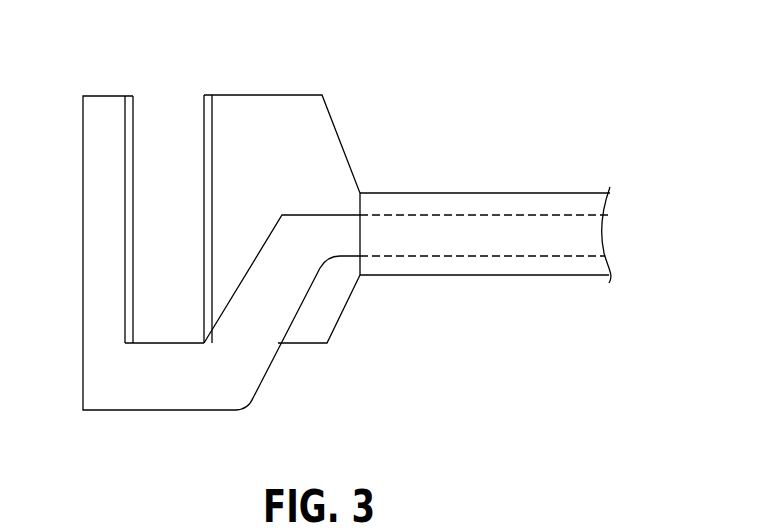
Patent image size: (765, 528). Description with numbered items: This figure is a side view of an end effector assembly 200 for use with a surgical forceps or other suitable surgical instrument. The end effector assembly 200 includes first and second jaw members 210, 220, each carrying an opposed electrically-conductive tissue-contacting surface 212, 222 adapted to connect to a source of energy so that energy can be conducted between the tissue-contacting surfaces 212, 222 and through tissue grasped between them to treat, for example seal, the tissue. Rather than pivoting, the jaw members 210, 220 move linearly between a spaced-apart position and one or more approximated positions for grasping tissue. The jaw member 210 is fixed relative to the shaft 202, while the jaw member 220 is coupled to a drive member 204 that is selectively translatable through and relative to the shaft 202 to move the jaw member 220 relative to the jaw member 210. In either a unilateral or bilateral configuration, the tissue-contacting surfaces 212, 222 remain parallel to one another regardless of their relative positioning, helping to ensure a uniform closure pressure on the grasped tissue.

The end effector assembly 200 is at (511, 105).
The shaft 202 is at (477, 277).
The drive member 204 is at (547, 230).
The first jaw member 210 is at (126, 422).
The tissue-contacting surface 212 is at (135, 143).
The second jaw member 220 is at (296, 86).
The tissue-contacting surface 222 is at (203, 112).